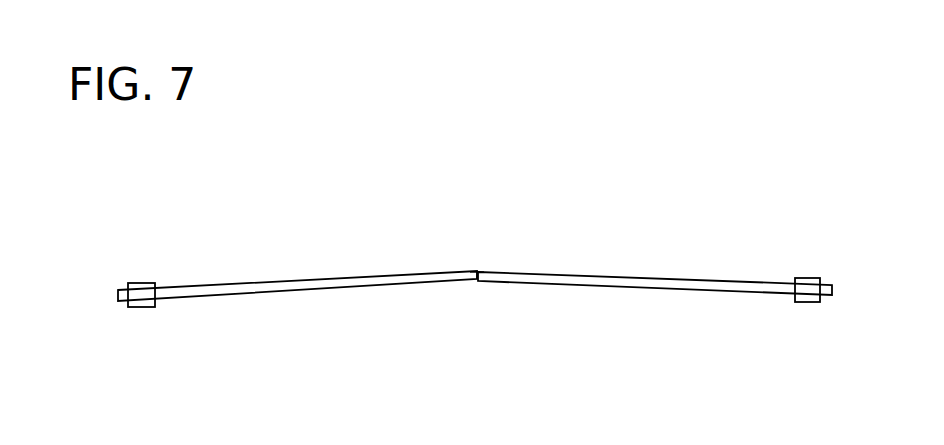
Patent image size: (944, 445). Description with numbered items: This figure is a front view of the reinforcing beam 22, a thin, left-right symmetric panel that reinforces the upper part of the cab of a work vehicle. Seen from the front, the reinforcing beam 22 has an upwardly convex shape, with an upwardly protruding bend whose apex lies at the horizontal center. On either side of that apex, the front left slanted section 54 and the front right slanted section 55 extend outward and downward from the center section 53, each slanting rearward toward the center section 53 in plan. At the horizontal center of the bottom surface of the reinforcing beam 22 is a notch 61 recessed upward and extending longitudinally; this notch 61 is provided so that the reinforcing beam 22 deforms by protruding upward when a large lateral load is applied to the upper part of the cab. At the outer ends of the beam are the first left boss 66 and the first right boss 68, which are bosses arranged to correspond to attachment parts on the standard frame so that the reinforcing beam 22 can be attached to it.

The reinforcing beam 22 is at (432, 243).
The center section 53 is at (455, 281).
The front left slanted section 54 is at (752, 296).
The front right slanted section 55 is at (222, 298).
The notch 61 is at (478, 271).
The first left boss 66 is at (813, 278).
The first right boss 68 is at (147, 282).